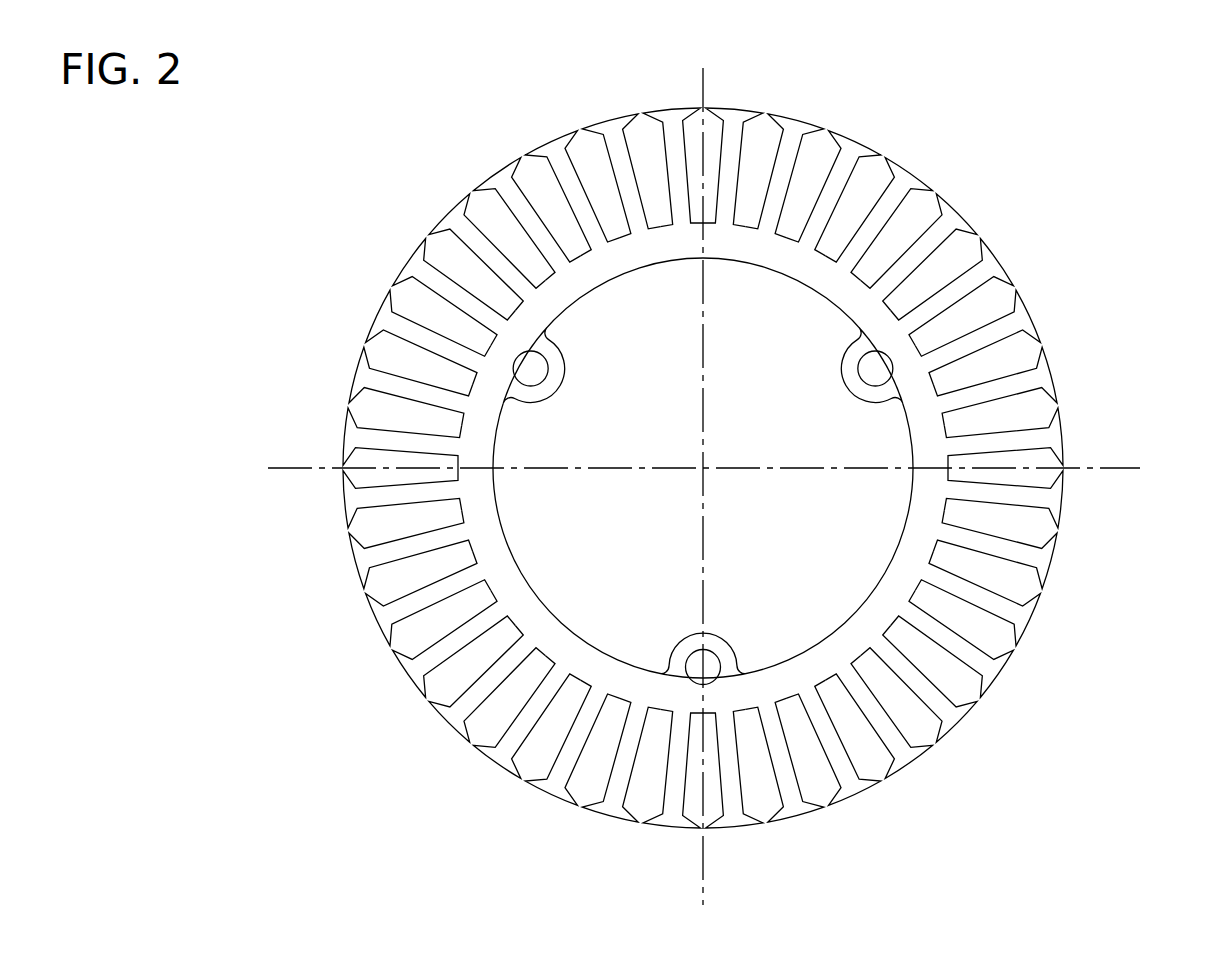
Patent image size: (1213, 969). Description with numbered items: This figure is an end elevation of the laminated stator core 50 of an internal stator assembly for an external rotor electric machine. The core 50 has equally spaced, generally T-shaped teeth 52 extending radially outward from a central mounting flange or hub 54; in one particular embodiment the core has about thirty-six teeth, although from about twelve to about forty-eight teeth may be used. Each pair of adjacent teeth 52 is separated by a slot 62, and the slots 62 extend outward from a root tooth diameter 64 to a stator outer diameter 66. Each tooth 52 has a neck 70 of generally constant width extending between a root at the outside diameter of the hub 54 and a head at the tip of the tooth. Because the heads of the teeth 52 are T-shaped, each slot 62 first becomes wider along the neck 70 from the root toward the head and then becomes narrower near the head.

The laminated stator core 50 is at (718, 500).
The tooth 52 is at (620, 743).
The central mounting flange or hub 54 is at (556, 620).
The slot 62 is at (749, 756).
The root tooth diameter 64 is at (789, 236).
The stator outer diameter 66 is at (898, 172).
The neck 70 is at (1008, 347).